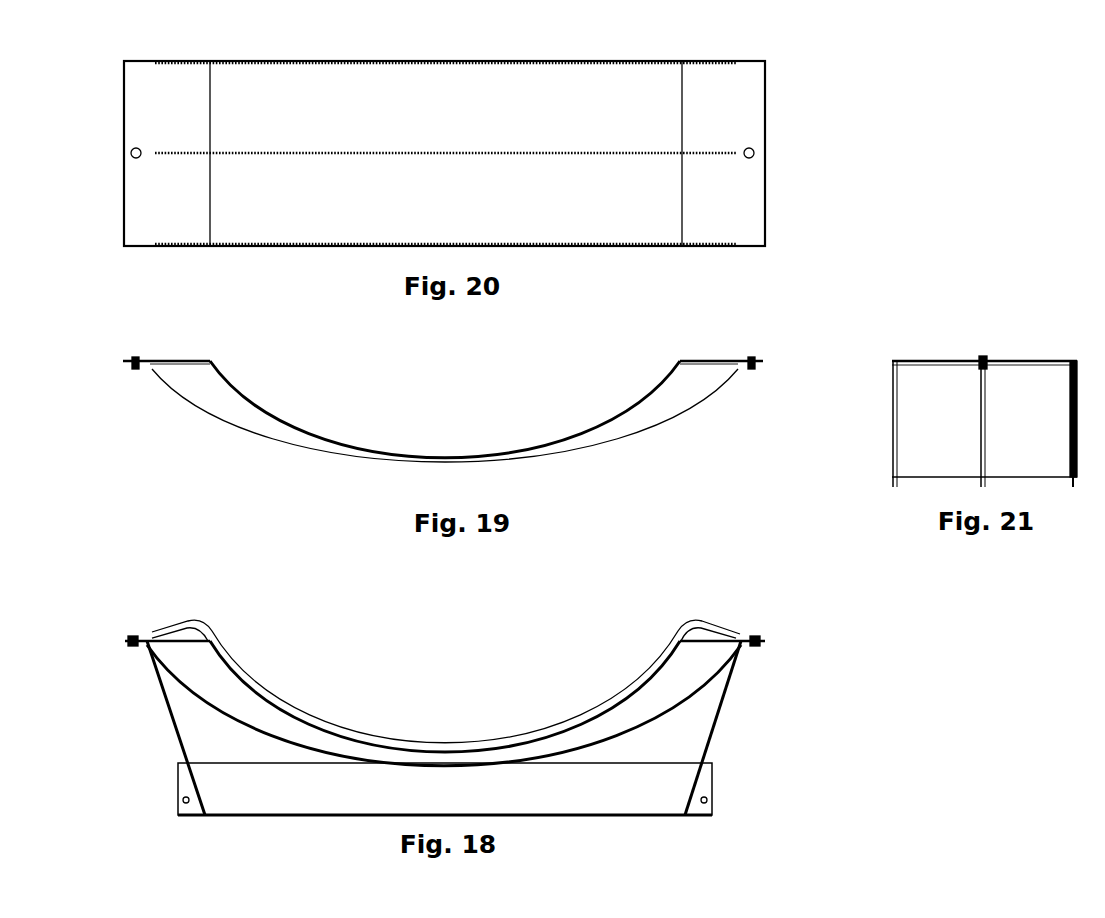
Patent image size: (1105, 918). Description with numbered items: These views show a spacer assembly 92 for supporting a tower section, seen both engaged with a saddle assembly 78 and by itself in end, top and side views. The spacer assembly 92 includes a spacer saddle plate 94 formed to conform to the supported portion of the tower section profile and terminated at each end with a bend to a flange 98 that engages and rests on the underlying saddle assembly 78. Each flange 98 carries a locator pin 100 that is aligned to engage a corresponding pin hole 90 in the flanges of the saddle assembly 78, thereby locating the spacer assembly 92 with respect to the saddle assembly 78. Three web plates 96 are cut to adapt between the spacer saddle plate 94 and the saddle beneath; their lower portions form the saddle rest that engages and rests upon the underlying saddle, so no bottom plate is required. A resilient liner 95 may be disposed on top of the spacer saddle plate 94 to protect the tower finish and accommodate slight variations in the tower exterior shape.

In FIG. 18, the saddle assembly 78 is at (718, 735).
In FIG. 18, the locator pin hole 90 is at (143, 650).
In FIG. 19, the spacer assembly 92 is at (826, 311).
In FIG. 18, the spacer assembly 92 is at (676, 700).
In FIG. 20, the spacer saddle plate 94 is at (408, 61).
In FIG. 19, the spacer saddle plate 94 is at (466, 472).
In FIG. 21, the spacer saddle plate 94 is at (1030, 478).
In FIG. 18, the spacer saddle plate 94 is at (668, 650).
In FIG. 18, the resilient liner 95 is at (505, 735).
In FIG. 20, the web plates 96 is at (462, 66).
In FIG. 19, the web plates 96 is at (376, 485).
In FIG. 21, the web plates 96 is at (980, 415).
In FIG. 20, the flanges 98 is at (124, 97).
In FIG. 19, the flanges 98 is at (150, 359).
In FIG. 20, the locator pin 100 is at (132, 150).
In FIG. 19, the locator pin 100 is at (136, 370).
In FIG. 21, the locator pin 100 is at (984, 355).
In FIG. 18, the locator pin 100 is at (133, 635).